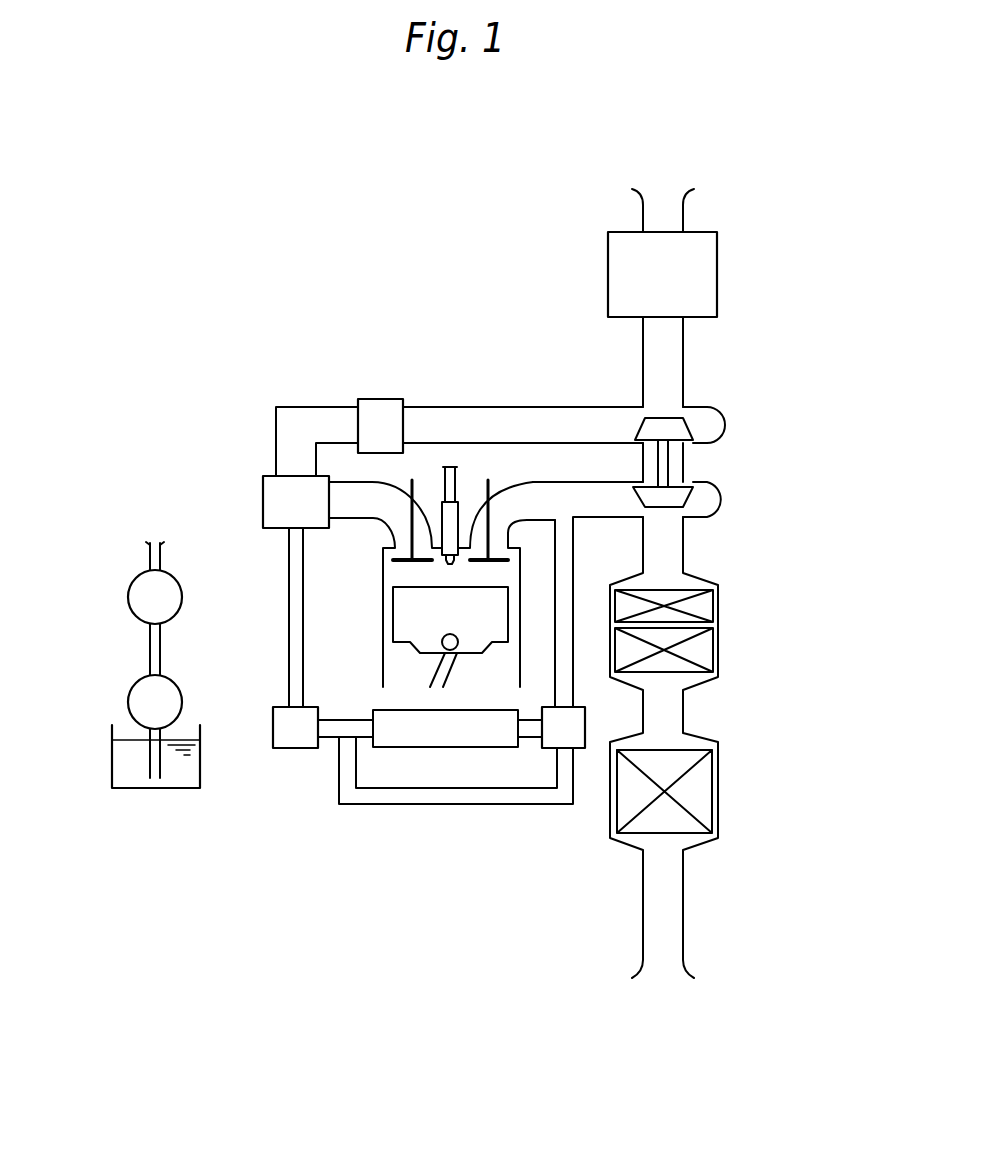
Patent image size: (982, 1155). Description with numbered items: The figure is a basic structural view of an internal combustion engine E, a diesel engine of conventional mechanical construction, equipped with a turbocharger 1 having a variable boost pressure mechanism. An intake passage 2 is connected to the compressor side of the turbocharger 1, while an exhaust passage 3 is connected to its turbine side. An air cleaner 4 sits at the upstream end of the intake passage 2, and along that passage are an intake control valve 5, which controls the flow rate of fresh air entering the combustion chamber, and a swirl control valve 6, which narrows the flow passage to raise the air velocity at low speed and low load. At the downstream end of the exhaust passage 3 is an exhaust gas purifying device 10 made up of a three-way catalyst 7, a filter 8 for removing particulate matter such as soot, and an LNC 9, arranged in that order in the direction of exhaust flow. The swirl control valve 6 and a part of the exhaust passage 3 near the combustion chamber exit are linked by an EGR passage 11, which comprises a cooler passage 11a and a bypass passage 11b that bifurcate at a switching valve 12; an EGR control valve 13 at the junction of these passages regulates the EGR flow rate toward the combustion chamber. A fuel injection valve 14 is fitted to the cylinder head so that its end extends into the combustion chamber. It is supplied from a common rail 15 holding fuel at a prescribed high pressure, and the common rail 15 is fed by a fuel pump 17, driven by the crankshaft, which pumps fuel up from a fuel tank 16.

The turbocharger 1 is at (697, 467).
The intake passage 2 is at (557, 407).
The exhaust passage 3 is at (600, 518).
The air cleaner 4 is at (712, 283).
The intake control valve 5 is at (384, 405).
The swirl control valve 6 is at (270, 503).
The three-way catalyst 7 is at (705, 608).
The filter 8 is at (705, 657).
The LNC 9 is at (695, 787).
The exhaust gas purifying device 10 is at (728, 711).
The EGR passage 11 is at (445, 819).
The cooler passage 11a is at (398, 747).
The bypass passage 11b is at (368, 877).
The switching valve 12 is at (580, 737).
The EGR control valve 13 is at (300, 742).
The fuel injection valve 14 is at (453, 512).
The common rail 15 is at (135, 595).
The fuel tank 16 is at (120, 766).
The fuel pump 17 is at (135, 697).
The internal combustion engine E is at (378, 625).